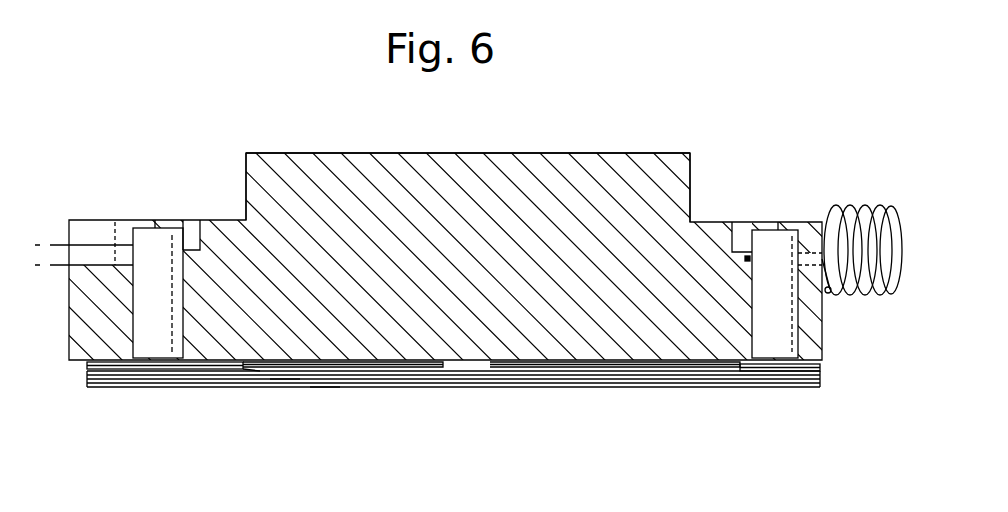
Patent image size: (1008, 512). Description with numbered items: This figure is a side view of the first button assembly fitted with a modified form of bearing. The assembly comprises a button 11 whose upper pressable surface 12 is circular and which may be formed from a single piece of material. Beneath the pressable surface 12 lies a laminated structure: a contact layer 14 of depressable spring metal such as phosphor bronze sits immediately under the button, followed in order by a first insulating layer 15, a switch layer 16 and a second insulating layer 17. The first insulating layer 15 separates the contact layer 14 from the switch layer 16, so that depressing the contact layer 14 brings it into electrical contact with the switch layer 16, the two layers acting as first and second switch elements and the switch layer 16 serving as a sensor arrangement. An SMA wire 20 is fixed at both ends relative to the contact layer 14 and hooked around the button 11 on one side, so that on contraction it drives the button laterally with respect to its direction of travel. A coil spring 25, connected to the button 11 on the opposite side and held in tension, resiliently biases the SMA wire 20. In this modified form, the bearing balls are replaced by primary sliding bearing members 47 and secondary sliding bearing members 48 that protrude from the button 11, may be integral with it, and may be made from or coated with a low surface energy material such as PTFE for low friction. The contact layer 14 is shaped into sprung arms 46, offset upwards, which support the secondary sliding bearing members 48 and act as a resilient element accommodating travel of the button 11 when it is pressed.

The button 11 is at (716, 250).
The pressable surface 12 is at (398, 153).
The contact layer 14 is at (405, 373).
The first insulating layer 15 is at (232, 373).
The switch layer 16 is at (273, 380).
The second insulating layer 17 is at (322, 388).
The SMA wire 20 is at (95, 242).
The coil spring 25 is at (857, 205).
The sprung arms 46 is at (152, 390).
The primary sliding bearing members 47 is at (466, 368).
The secondary sliding bearing members 48 is at (200, 365).